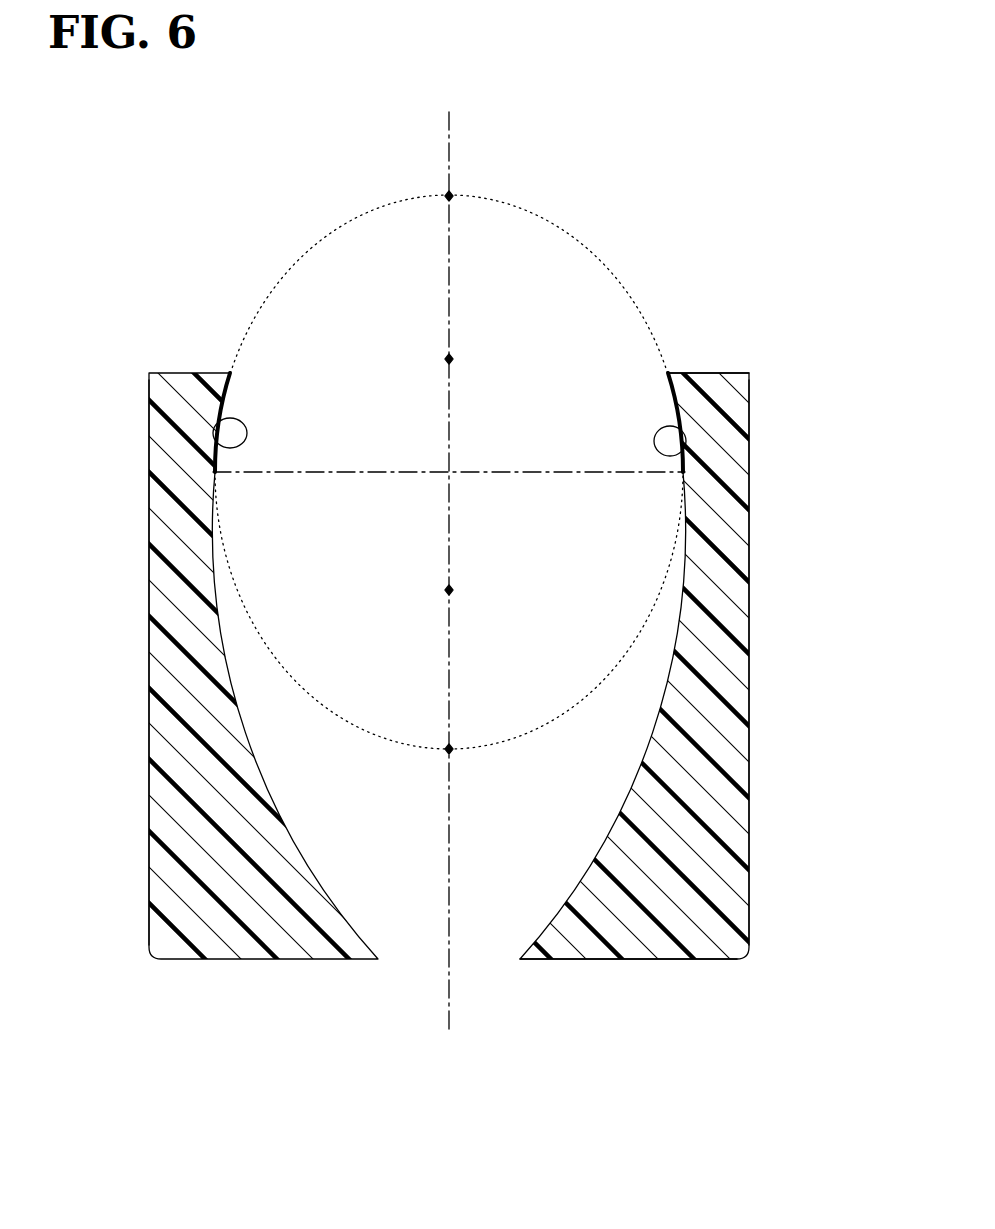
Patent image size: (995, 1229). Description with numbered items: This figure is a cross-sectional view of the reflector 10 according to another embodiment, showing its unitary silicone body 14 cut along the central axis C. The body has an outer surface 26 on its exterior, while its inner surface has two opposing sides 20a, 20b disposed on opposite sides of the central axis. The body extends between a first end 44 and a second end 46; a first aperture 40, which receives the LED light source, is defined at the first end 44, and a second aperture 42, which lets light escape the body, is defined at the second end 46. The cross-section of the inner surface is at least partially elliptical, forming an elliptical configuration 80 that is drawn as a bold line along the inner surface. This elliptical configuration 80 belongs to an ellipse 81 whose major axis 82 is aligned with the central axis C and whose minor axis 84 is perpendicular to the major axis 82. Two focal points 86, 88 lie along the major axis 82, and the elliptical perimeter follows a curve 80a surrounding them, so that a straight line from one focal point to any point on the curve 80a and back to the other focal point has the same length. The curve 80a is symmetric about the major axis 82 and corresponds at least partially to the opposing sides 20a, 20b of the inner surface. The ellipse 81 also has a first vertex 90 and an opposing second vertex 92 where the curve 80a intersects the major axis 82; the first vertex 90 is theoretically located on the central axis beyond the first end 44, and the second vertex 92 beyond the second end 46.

The reflector 10 is at (766, 302).
The unitary silicone body 14 is at (697, 760).
The opposing side of inner surface 20a is at (213, 447).
The opposing side of inner surface 20b is at (685, 450).
The outer surface 26 is at (148, 884).
The first aperture 40 is at (408, 957).
The second aperture 42 is at (265, 375).
The first end 44 is at (516, 961).
The second end 46 is at (669, 374).
The elliptical configuration 80 is at (657, 403).
The curve 80a is at (639, 304).
The ellipse 81 is at (368, 205).
The major axis 82 is at (452, 876).
The minor axis 84 is at (395, 476).
The focal point 86 is at (452, 357).
The focal point 88 is at (452, 587).
The first vertex 90 is at (452, 193).
The second vertex 92 is at (452, 746).